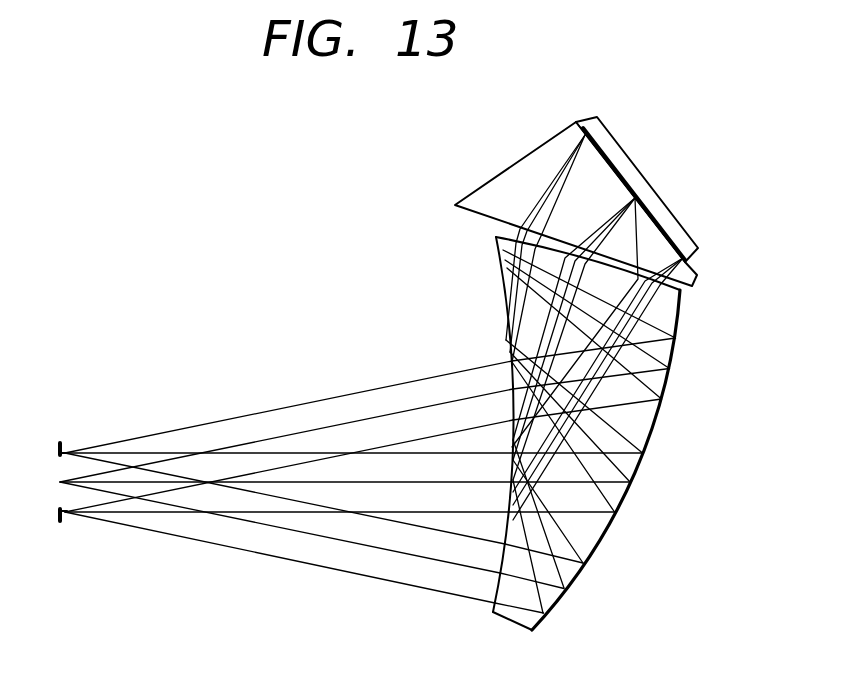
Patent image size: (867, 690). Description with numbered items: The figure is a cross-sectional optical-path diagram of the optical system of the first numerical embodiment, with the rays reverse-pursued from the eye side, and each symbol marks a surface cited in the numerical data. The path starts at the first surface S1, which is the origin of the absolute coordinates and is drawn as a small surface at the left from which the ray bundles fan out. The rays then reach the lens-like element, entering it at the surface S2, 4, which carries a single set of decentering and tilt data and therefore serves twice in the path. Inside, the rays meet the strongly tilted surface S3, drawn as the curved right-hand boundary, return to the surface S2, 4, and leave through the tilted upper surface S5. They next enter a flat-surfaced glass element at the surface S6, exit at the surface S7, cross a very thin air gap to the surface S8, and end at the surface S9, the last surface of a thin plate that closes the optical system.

The first surface S1 is at (56, 525).
The second and fourth surfaces S2, 4 is at (494, 585).
The third surface S3 is at (600, 542).
The fifth surface S5 is at (537, 242).
The sixth surface S6 is at (468, 210).
The seventh surface S7 is at (585, 132).
The eighth surface S8 is at (587, 127).
The ninth surface S9 is at (600, 122).